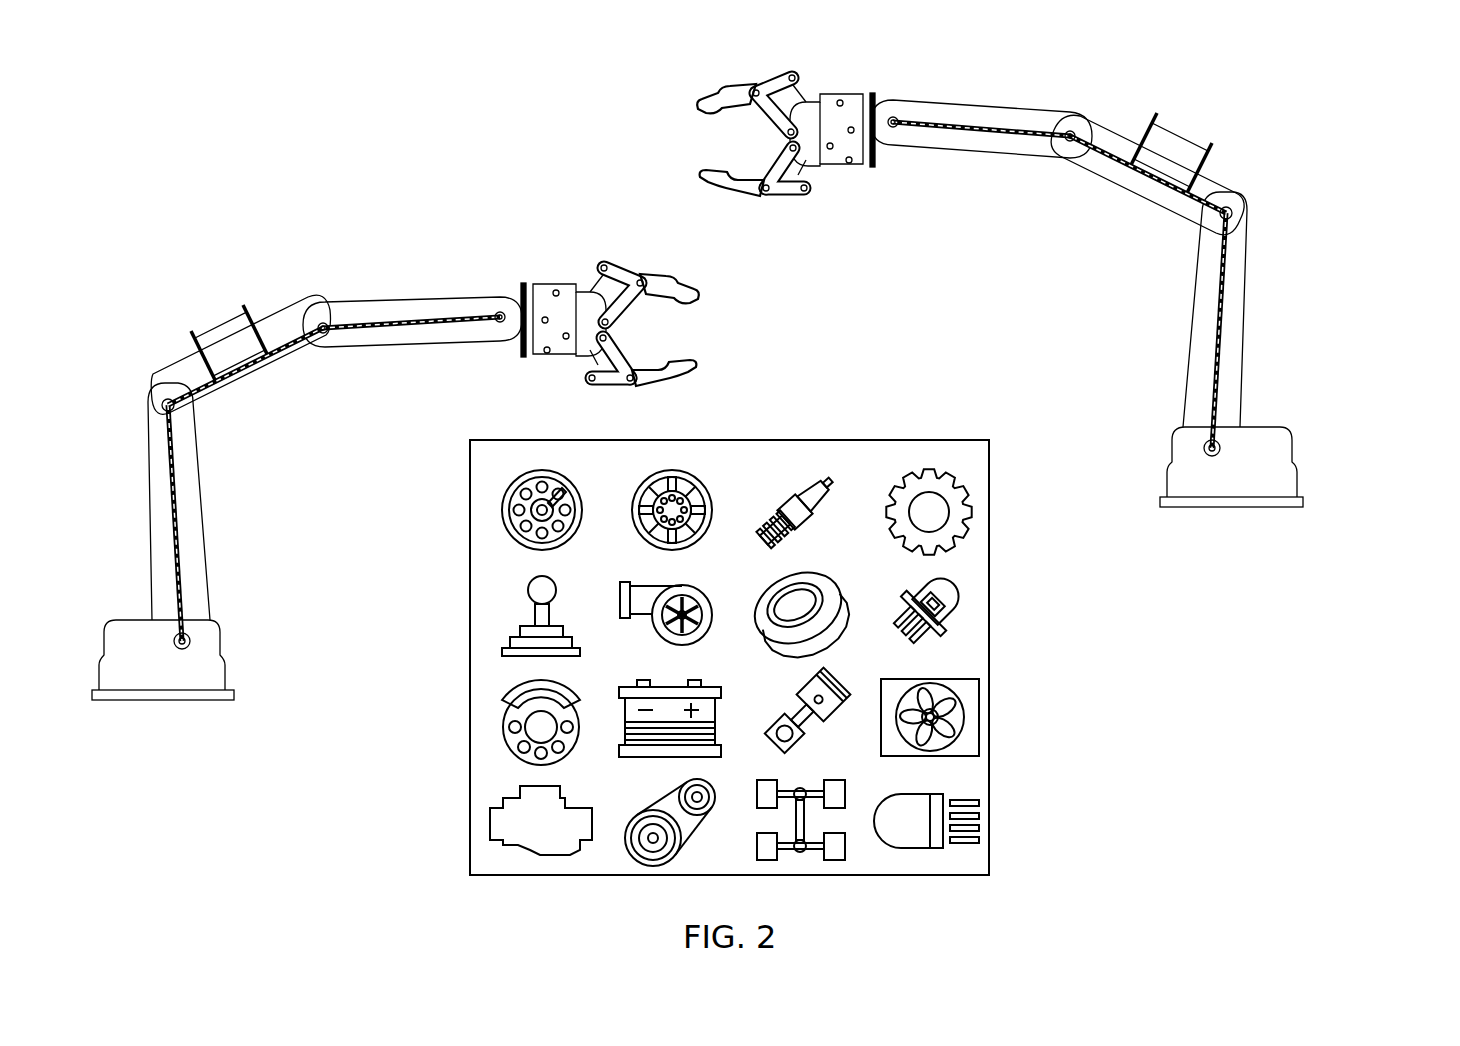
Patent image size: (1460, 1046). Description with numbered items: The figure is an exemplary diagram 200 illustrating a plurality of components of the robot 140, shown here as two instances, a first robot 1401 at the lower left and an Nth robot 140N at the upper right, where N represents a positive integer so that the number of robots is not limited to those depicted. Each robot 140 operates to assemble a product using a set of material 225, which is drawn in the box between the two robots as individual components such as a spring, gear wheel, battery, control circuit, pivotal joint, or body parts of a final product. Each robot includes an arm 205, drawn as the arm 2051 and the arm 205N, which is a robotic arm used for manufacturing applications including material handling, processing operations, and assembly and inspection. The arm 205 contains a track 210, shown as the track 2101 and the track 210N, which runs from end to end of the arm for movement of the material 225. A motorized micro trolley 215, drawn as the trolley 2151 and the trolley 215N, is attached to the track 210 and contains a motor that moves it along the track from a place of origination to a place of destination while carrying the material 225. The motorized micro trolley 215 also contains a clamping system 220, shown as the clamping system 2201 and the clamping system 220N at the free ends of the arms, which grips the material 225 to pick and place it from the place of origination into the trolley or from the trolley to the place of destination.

The exemplary diagram 200 is at (288, 68).
The robot 140 is at (771, 377).
The robot 1401 is at (215, 244).
The robot 140N is at (1320, 176).
The arm 205 is at (342, 320).
The arm 2051 is at (407, 300).
The arm 205N is at (988, 106).
The track 210 is at (225, 516).
The track 2101 is at (175, 465).
The track 210N is at (1232, 240).
The motorized micro trolley 215 is at (185, 343).
The motorized micro trolley 2151 is at (195, 348).
The motorized micro trolley 215N is at (1182, 146).
The clamping system 220 is at (646, 325).
The clamping system 2201 is at (684, 290).
The clamping system 220N is at (718, 100).
The material 225 is at (890, 440).